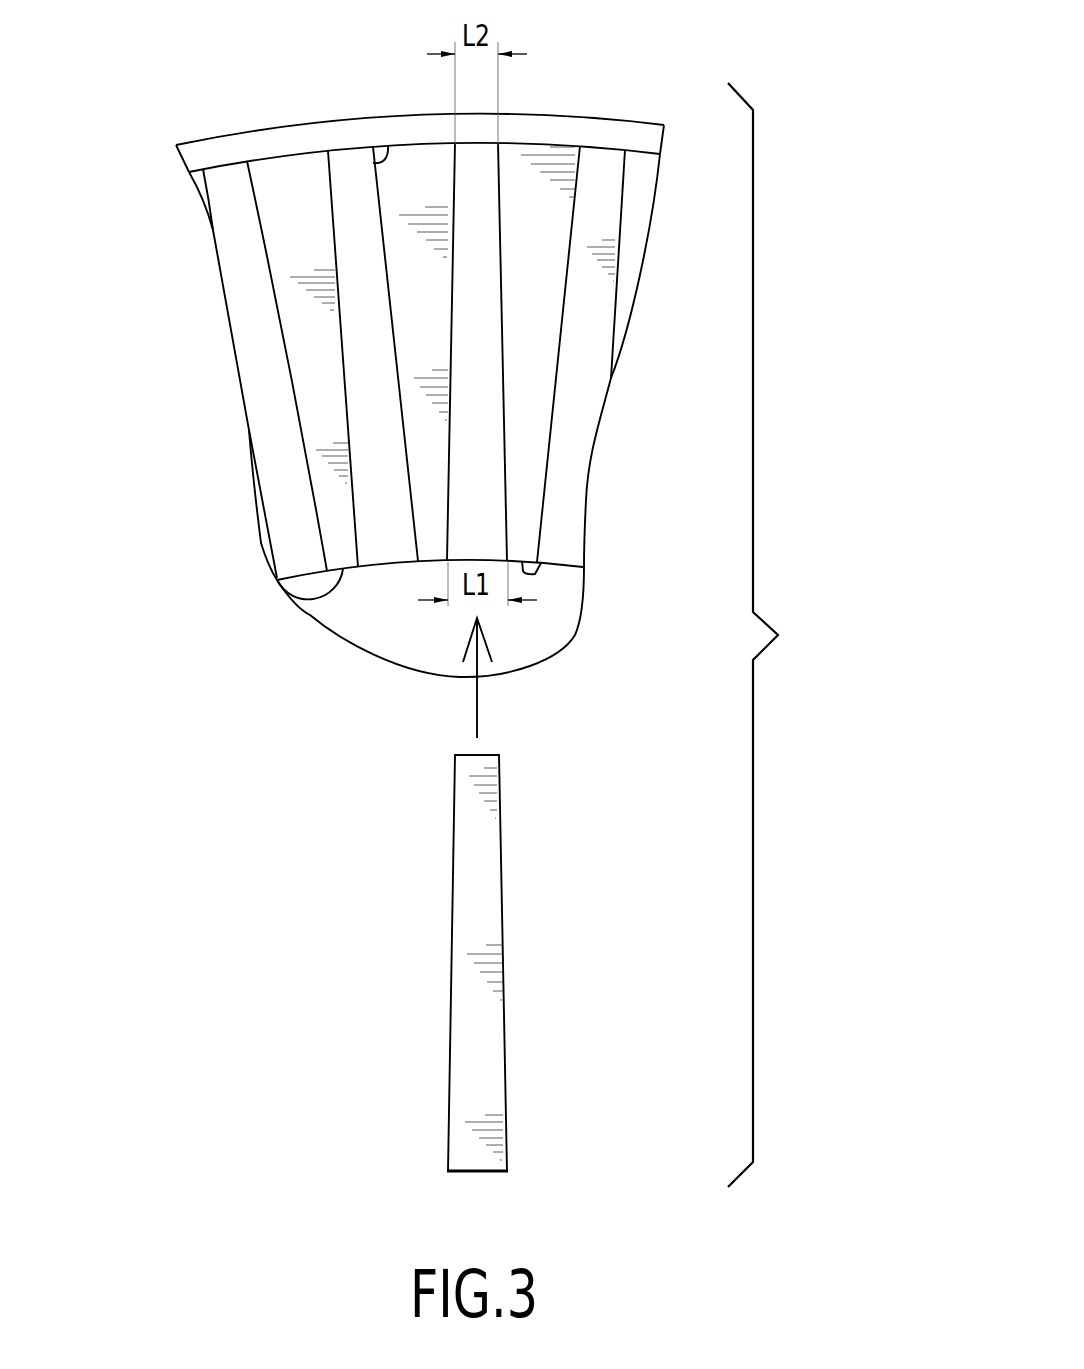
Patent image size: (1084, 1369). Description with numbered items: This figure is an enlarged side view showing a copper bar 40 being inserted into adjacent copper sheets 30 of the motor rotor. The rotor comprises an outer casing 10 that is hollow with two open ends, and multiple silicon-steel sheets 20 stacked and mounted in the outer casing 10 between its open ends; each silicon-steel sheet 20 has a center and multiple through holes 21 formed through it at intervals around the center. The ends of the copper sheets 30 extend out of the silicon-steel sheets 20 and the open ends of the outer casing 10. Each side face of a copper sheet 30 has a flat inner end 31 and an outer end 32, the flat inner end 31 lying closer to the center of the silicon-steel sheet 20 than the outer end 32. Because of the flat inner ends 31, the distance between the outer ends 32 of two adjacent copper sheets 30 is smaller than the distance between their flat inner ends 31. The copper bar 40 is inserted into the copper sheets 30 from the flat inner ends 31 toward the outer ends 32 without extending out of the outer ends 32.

The outer casing 10 is at (282, 140).
The silicon-steel sheet 20 is at (377, 640).
The through hole 21 is at (388, 145).
The copper sheet 30 is at (427, 140).
The flat inner end 31 is at (310, 615).
The outer end 32 is at (255, 161).
The copper bar 40 is at (507, 860).